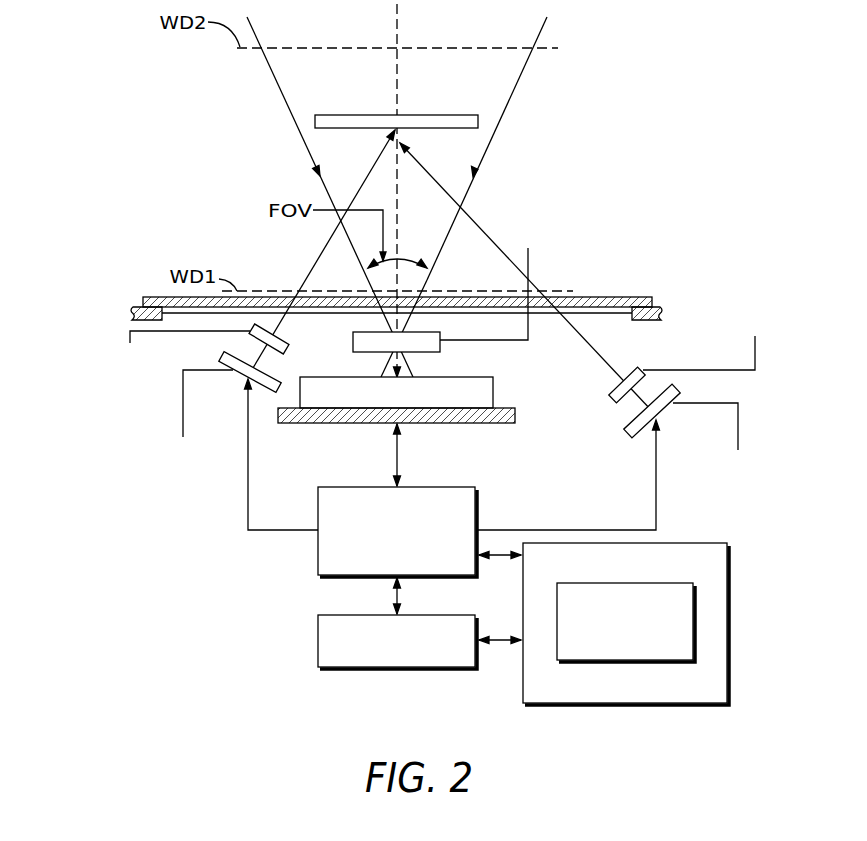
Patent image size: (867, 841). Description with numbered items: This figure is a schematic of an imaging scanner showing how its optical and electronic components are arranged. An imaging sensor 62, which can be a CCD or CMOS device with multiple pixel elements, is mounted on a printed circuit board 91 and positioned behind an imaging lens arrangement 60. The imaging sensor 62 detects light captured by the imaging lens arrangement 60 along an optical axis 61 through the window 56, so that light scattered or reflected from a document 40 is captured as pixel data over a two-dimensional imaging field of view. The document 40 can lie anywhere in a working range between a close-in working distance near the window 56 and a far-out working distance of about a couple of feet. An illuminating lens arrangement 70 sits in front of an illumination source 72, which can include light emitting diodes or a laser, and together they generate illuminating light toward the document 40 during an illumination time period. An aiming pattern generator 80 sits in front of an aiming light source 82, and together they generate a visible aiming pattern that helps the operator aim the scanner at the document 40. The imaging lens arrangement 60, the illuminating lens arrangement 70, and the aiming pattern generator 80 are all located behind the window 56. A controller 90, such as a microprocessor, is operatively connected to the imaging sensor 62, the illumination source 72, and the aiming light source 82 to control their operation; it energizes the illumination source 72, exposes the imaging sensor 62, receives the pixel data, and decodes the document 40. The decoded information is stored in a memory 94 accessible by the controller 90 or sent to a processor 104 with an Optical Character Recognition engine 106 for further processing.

The document 40 is at (446, 115).
The window 56 is at (160, 297).
The imaging lens arrangement 60 is at (353, 340).
The optical axis 61 is at (398, 22).
The imaging sensor 62 is at (483, 377).
The illuminating lens arrangement 70 is at (760, 263).
The illumination source 72 is at (782, 497).
The aiming pattern generator 80 is at (110, 348).
The aiming light source 82 is at (177, 509).
The controller 90 is at (470, 487).
The printed circuit board 91 is at (430, 425).
The memory 94 is at (465, 615).
The processor 104 is at (668, 543).
The OCR engine 106 is at (625, 583).